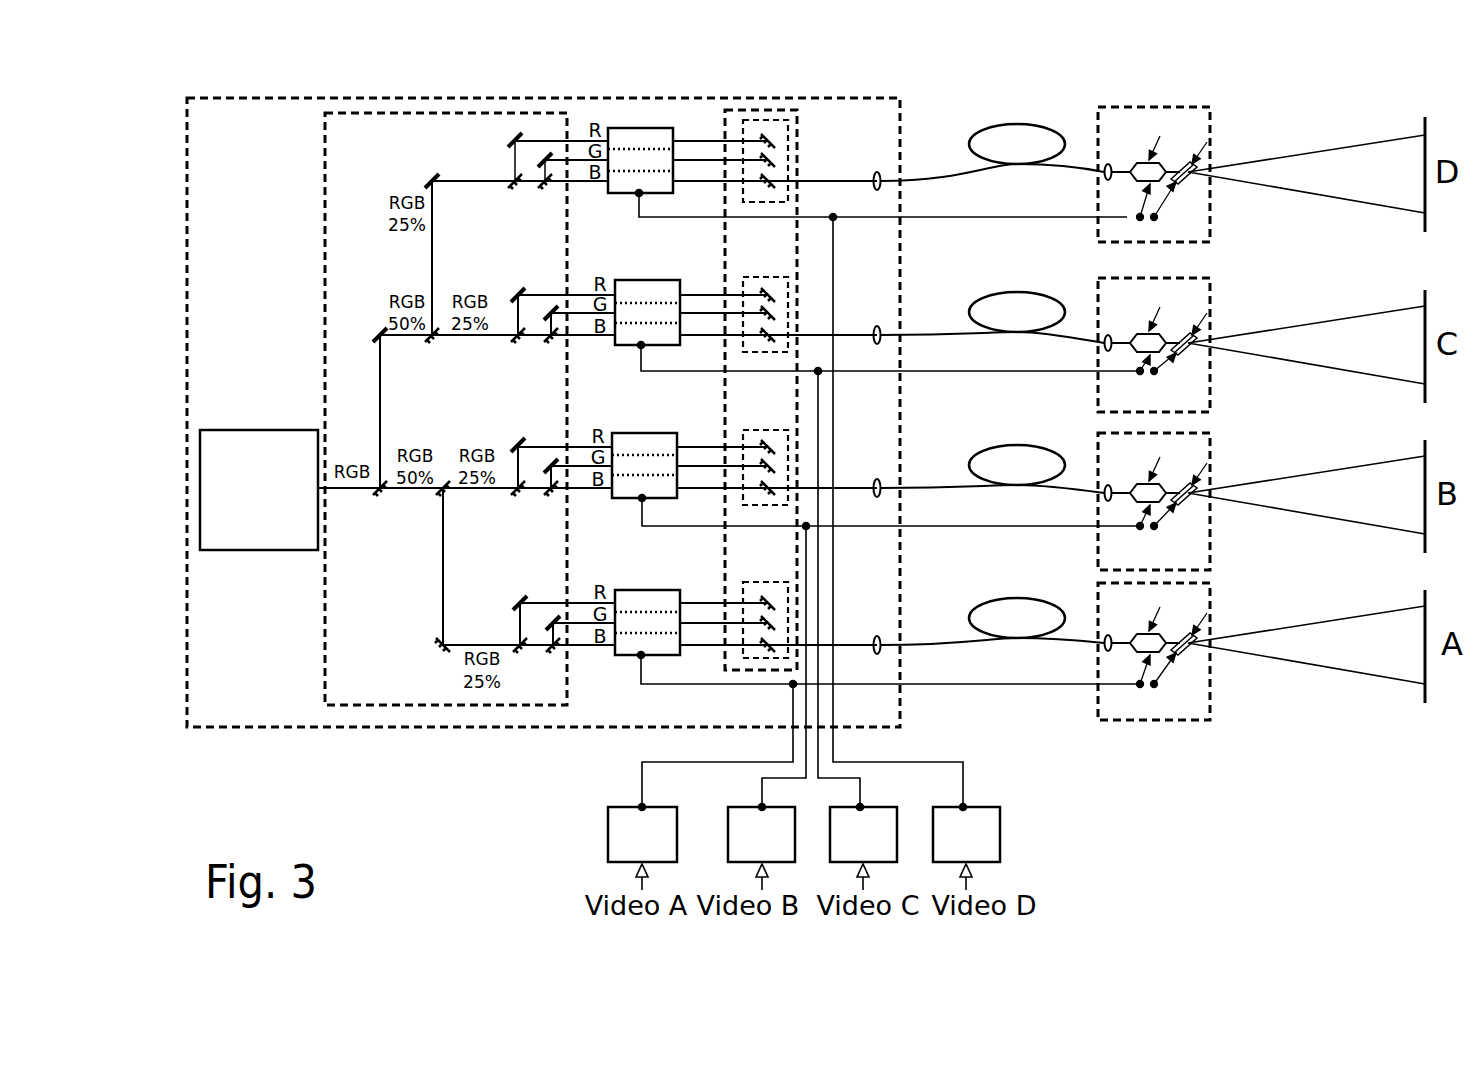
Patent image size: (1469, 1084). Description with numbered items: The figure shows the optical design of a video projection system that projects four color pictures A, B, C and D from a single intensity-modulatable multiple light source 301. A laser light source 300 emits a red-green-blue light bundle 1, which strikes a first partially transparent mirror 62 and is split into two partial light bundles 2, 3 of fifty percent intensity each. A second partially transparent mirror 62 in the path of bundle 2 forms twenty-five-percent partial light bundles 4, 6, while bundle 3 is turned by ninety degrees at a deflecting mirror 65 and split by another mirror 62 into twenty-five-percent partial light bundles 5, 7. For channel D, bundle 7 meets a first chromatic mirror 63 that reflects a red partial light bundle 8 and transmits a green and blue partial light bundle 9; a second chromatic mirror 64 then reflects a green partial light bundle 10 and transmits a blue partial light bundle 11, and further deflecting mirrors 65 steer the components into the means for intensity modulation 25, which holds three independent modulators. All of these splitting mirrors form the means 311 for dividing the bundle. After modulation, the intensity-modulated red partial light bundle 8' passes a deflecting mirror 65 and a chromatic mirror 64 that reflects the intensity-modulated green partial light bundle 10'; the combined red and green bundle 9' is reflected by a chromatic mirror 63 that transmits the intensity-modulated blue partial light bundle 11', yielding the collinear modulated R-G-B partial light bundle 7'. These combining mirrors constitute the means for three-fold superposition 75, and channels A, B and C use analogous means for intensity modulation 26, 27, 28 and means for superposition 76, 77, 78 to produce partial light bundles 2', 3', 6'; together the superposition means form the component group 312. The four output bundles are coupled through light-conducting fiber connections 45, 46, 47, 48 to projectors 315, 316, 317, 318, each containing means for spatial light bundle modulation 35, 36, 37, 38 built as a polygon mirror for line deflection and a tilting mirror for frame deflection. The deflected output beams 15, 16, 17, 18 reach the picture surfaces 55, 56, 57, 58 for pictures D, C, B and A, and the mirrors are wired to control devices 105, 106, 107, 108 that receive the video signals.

The light source 300 is at (259, 490).
The multiple light source 301 is at (902, 118).
The means for dividing the R-G-B light bundle 311 is at (345, 113).
The component group for superposition 312 is at (797, 123).
The red-green-blue light bundle 1 is at (340, 490).
The partial light bundle 2 is at (411, 519).
The partial light bundle 3 is at (359, 411).
The partial light bundle 4 is at (460, 490).
The partial light bundle 5 is at (446, 338).
The partial light bundle 6 is at (459, 566).
The partial light bundle 7 is at (451, 258).
The red partial light bundle 8 is at (561, 99).
The green and blue partial light bundle 9 is at (525, 223).
The green partial light bundle 10 is at (576, 109).
The blue partial light bundle 11 is at (576, 207).
The intensity-modulated red partial light bundle 8' is at (701, 99).
The intensity-modulated red and green partial light bundle 9' is at (791, 177).
The intensity-modulated green partial light bundle 10' is at (708, 109).
The intensity-modulated blue partial light bundle 11' is at (757, 220).
The collinear brightness- and color-modulated R-G-B partial light bundle 7' is at (869, 156).
The brightness-modulated and color-modulated partial light bundle 3' is at (867, 310).
The brightness-modulated and color-modulated partial light bundle 2' is at (874, 463).
The brightness-modulated and color-modulated partial light bundle 6' is at (875, 622).
The means for intensity modulation 25 is at (621, 194).
The means for intensity modulation 26 is at (620, 346).
The means for intensity modulation 27 is at (620, 499).
The means for intensity modulation 28 is at (620, 656).
The partially transparent mirror 62 is at (430, 338).
The chromatic mirror 63 is at (512, 183).
The chromatic mirror 64 is at (548, 184).
The deflecting mirror 65 is at (543, 158).
The means for three-fold superposition 75 is at (748, 204).
The means for superposition 76 is at (748, 353).
The means for superposition 77 is at (748, 506).
The means for superposition 78 is at (748, 660).
The light-conducting fiber connection 45 is at (1020, 123).
The light-conducting fiber connection 46 is at (1020, 293).
The light-conducting fiber connection 47 is at (1020, 447).
The light-conducting fiber connection 48 is at (1020, 600).
The projector 315 is at (1210, 120).
The projector 316 is at (1210, 290).
The projector 317 is at (1210, 445).
The projector 318 is at (1210, 597).
The means for spatial light bundle modulation 35 is at (1190, 169).
The means for spatial light bundle modulation 36 is at (1192, 338).
The means for spatial light bundle modulation 37 is at (1192, 489).
The means for spatial light bundle modulation 38 is at (1192, 640).
The projected light beam 15 is at (1365, 142).
The projected light beam 16 is at (1363, 314).
The projected light beam 17 is at (1365, 465).
The projected light beam 18 is at (1365, 615).
The screen D 55 is at (1427, 117).
The screen C 56 is at (1427, 290).
The screen B 57 is at (1427, 442).
The screen A 58 is at (1427, 592).
The control device 105 is at (966, 834).
The control device 106 is at (863, 834).
The control device 107 is at (761, 834).
The control device 108 is at (642, 834).